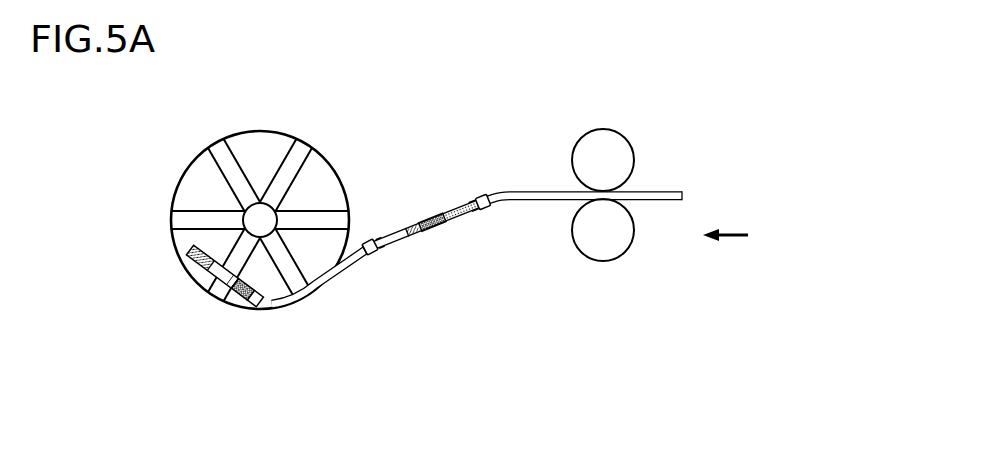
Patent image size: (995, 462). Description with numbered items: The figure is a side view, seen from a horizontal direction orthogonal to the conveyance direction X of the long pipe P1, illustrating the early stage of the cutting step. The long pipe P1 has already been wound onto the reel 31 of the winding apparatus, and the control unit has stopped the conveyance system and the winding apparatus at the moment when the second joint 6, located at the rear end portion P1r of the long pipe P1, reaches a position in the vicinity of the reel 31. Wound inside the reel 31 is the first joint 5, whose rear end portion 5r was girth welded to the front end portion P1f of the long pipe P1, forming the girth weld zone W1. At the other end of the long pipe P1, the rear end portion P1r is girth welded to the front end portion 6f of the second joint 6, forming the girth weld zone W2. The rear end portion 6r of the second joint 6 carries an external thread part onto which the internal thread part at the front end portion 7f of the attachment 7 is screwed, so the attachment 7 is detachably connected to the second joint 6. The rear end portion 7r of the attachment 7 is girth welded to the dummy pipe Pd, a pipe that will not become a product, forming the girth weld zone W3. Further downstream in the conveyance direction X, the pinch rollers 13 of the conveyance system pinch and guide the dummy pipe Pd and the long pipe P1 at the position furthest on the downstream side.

The reel 31 is at (256, 131).
The first joint 5 is at (201, 292).
The rear end portion of the first joint 5r is at (233, 308).
The girth weld zone W1 is at (243, 305).
The front end portion of the long pipe P1f is at (255, 308).
The long pipe P1 is at (343, 274).
The rear end portion of the long pipe P1r is at (366, 255).
The girth weld zone W2 is at (369, 240).
The front end portion of the second joint 6f is at (378, 242).
The second joint 6 is at (397, 243).
The rear end portion of the second joint 6r is at (413, 226).
The front end portion of the attachment 7f is at (423, 229).
The attachment 7 is at (434, 229).
The rear end portion of the attachment 7r is at (469, 206).
The girth weld zone W3 is at (480, 210).
The dummy pipe Pd is at (648, 191).
The pinch rollers 13 is at (601, 138).
The conveyance direction X is at (734, 235).